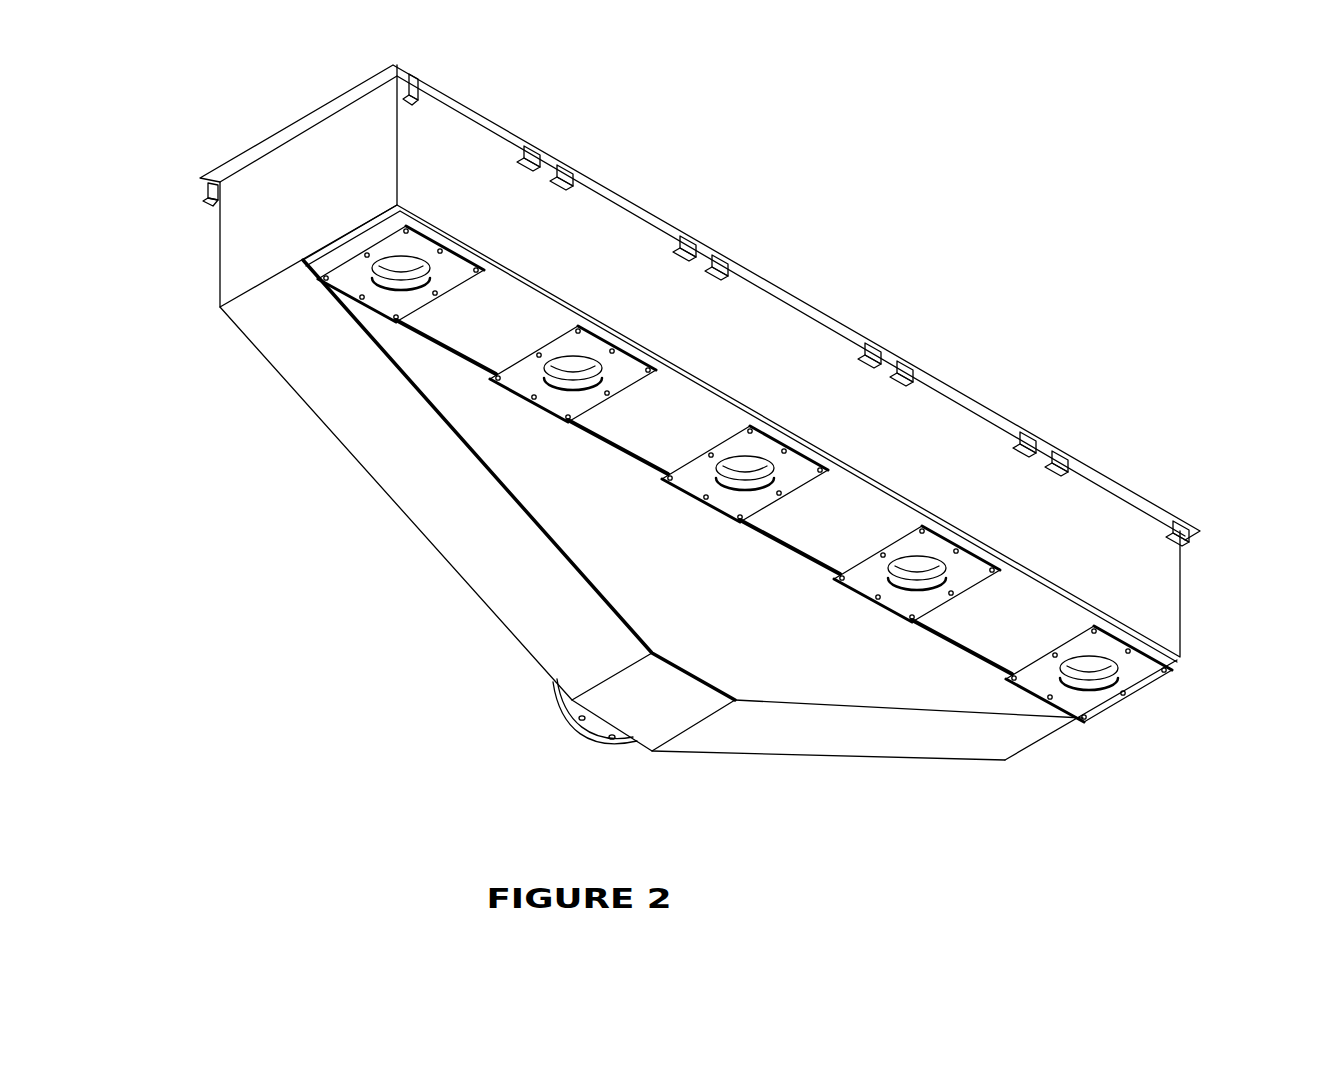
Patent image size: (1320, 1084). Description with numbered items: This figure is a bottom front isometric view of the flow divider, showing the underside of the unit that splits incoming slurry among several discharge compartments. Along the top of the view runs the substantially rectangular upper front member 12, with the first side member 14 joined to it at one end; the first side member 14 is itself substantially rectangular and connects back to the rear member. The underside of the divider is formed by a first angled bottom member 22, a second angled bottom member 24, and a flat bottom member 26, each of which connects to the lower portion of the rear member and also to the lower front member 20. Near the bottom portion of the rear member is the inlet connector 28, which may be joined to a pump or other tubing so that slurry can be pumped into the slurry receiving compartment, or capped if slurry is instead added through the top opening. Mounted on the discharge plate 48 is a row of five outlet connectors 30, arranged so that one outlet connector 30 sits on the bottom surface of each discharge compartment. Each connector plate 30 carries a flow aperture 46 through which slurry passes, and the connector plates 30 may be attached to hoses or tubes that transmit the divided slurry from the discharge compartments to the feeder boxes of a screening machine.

The upper front member 12 is at (910, 425).
The first side member 14 is at (267, 240).
The lower front member 20 is at (897, 688).
The first angled bottom member 22 is at (818, 735).
The second angled bottom member 24 is at (463, 518).
The flat bottom member 26 is at (670, 710).
The inlet connector 28 is at (553, 700).
The outlet connector 30 is at (363, 285).
The flow aperture 46 is at (410, 283).
The discharge plate 48 is at (1023, 618).